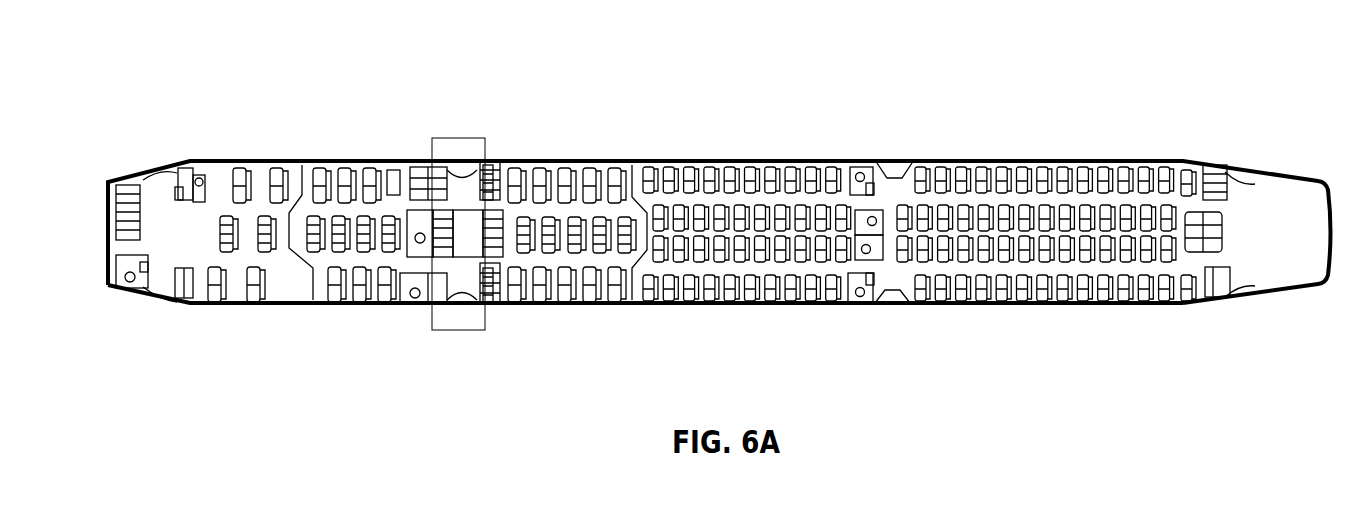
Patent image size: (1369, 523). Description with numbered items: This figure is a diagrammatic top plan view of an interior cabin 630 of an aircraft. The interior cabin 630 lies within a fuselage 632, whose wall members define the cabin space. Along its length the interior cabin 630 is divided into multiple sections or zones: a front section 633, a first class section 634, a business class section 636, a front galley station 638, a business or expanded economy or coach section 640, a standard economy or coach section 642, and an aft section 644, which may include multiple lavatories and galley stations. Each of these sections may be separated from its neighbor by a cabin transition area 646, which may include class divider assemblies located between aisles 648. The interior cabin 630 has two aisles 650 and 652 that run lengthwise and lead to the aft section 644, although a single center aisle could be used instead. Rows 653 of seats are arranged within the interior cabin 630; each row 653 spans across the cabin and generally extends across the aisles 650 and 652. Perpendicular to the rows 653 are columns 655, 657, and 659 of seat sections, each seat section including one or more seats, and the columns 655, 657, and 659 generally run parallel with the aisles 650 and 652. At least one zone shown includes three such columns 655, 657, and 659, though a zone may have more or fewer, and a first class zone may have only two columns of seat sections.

The interior cabin 630 is at (252, 71).
The fuselage 632 is at (580, 130).
The front section 633 is at (174, 318).
The first class section 634 is at (263, 308).
The business class section 636 is at (335, 160).
The front galley station 638 is at (458, 322).
The expanded economy section 640 is at (558, 305).
The standard economy section 642 is at (690, 242).
The aft section 644 is at (1255, 188).
The cabin transition area 646 is at (183, 165).
The aisles 648 is at (440, 212).
The aisle 650 is at (1036, 236).
The aisle 652 is at (1067, 270).
The rows of seats 653 is at (664, 308).
The column of seat sections 655 is at (645, 287).
The column of seat sections 657 is at (660, 225).
The column of seat sections 659 is at (650, 170).